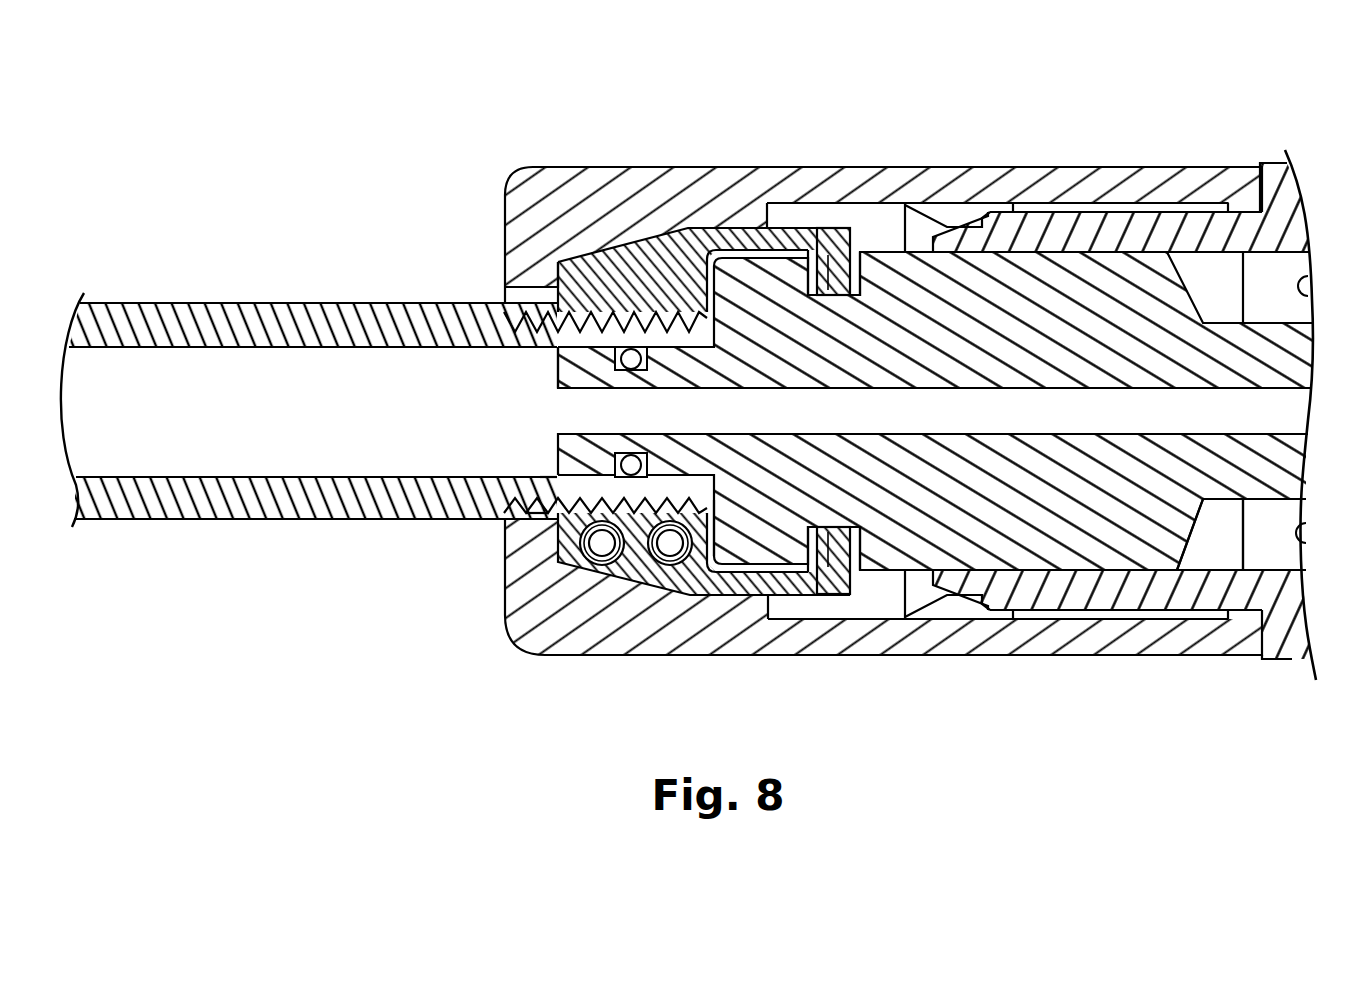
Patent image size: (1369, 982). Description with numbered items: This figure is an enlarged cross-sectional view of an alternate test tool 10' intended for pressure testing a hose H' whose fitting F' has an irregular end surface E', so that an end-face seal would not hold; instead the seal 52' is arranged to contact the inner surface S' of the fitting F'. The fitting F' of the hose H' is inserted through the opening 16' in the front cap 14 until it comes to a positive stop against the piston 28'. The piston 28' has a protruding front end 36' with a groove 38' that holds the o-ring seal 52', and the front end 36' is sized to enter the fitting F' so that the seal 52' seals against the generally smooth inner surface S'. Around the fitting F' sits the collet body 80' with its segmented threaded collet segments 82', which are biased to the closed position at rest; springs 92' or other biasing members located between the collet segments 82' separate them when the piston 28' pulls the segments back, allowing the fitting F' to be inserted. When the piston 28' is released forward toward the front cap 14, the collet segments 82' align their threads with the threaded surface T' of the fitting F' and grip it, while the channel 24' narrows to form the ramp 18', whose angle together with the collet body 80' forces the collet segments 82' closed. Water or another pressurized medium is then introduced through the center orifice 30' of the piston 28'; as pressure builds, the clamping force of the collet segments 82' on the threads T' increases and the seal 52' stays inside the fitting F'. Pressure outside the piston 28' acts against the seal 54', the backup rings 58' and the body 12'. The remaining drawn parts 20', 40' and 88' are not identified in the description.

The test tool 10' is at (1227, 372).
The body 12' is at (1158, 354).
The front cap 14 is at (932, 167).
The opening 16' is at (495, 265).
The ramp 18' is at (762, 655).
The end nut 20' is at (1307, 371).
The channel 24' is at (1097, 459).
The piston 28' is at (1210, 610).
The center orifice 30' is at (954, 411).
The front end 36' is at (525, 367).
The groove 38' is at (647, 435).
The retaining groove 40' is at (829, 337).
The seal 52' is at (578, 384).
The seal 54' is at (1332, 376).
The backup rings 58' is at (1282, 619).
The collet body 80' is at (677, 221).
The collet segments 82' is at (677, 407).
The retaining ring 88' is at (903, 412).
The springs 92' is at (608, 627).
The hose H' is at (309, 377).
The inner surface S' is at (520, 449).
The end surface E' is at (737, 476).
The fitting F' is at (493, 538).
The threaded surface T' is at (509, 573).